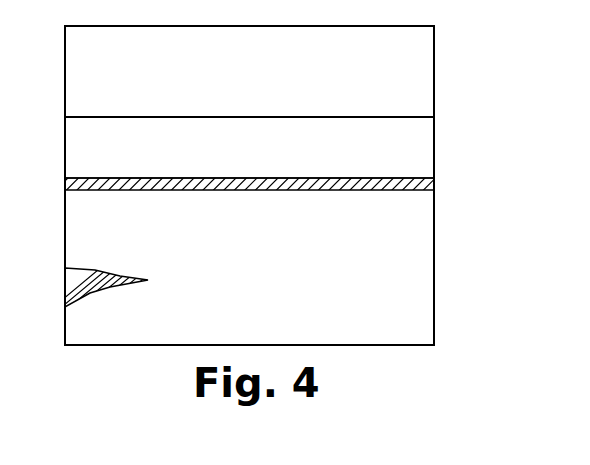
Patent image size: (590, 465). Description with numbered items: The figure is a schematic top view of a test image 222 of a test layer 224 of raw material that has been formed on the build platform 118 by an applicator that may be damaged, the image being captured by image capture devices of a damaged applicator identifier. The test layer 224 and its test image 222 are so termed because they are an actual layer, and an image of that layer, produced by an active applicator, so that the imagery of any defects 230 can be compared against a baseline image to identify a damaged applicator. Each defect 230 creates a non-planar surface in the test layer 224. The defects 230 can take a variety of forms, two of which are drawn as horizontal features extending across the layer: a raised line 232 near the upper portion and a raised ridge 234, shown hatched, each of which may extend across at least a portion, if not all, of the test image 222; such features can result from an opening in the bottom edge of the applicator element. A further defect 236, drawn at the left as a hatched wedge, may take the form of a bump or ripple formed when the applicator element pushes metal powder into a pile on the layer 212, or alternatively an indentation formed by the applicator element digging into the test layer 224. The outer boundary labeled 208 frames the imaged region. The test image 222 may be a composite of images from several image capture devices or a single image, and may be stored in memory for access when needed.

The fuel cell stack assembly 208 is at (439, 58).
The defect 230 is at (439, 131).
The raised line 232 is at (232, 116).
The raised ridge 234 is at (278, 182).
The defect 236 is at (95, 284).
The test image 222 is at (412, 314).
The test layer 224 is at (483, 287).
The layer 212 is at (282, 306).
The build platform 118 is at (398, 346).